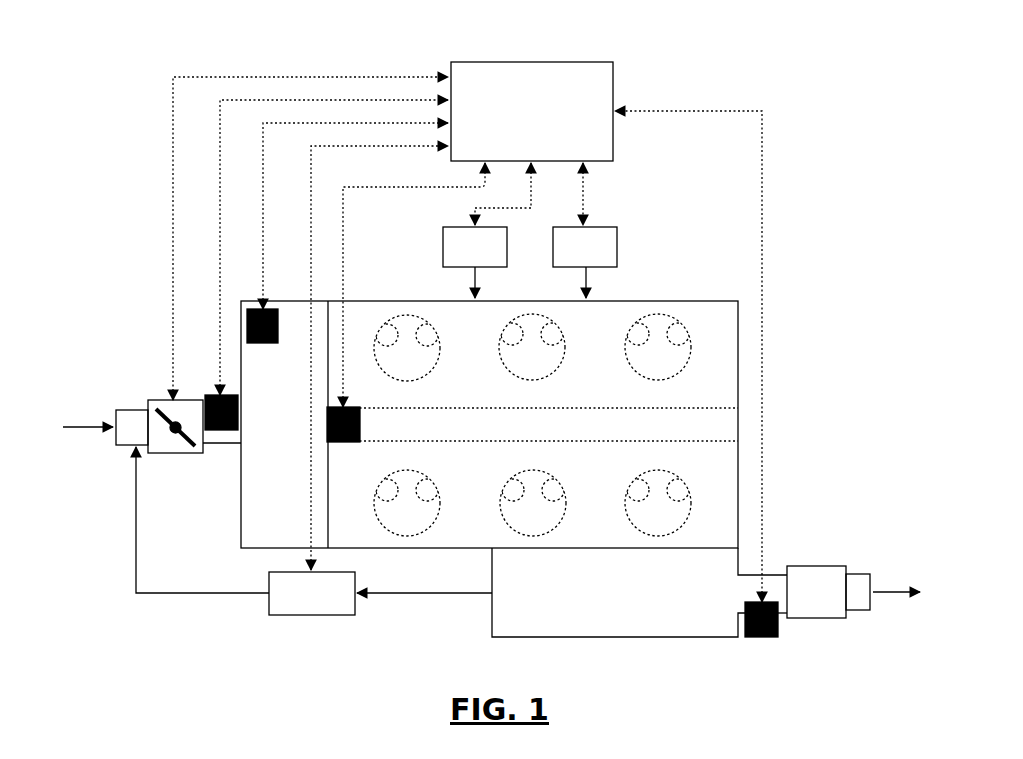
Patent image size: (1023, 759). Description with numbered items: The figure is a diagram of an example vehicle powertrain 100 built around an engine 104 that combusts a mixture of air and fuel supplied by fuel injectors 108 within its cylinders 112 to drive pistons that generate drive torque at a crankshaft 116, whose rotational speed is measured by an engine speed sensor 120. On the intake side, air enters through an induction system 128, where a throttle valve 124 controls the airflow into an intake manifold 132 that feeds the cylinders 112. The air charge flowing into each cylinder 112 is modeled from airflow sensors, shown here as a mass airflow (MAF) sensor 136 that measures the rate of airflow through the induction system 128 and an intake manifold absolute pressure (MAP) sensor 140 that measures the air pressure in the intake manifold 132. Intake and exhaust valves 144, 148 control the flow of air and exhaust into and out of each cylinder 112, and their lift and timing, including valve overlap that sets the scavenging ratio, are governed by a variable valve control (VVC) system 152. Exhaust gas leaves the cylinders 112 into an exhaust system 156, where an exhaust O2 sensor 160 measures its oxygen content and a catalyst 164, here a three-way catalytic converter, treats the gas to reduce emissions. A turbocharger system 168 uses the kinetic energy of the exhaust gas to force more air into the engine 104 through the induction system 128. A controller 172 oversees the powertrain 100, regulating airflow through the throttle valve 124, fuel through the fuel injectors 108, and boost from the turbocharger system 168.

The vehicle powertrain 100 is at (718, 59).
The engine 104 is at (680, 301).
The fuel injectors 108 is at (443, 244).
The cylinders 112 is at (431, 371).
The crankshaft 116 is at (533, 424).
The engine speed sensor 120 is at (360, 428).
The throttle valve 124 is at (178, 453).
The induction system 128 is at (130, 410).
The intake manifold 132 is at (240, 515).
The mass airflow (MAF) sensor 136 is at (238, 420).
The intake manifold absolute pressure (MAP) sensor 140 is at (263, 343).
The intake valves 144 is at (516, 339).
The exhaust valves 148 is at (677, 494).
The variable valve control (VVC) system 152 is at (617, 245).
The exhaust system 156 is at (645, 637).
The exhaust O2 sensor 160 is at (745, 613).
The catalyst 164 is at (815, 566).
The turbocharger system 168 is at (312, 615).
The controller 172 is at (530, 62).